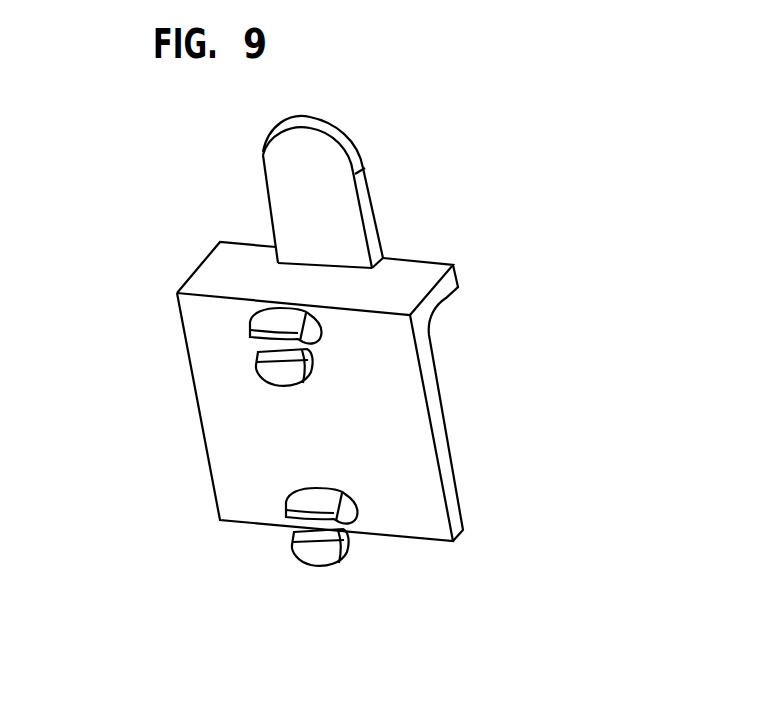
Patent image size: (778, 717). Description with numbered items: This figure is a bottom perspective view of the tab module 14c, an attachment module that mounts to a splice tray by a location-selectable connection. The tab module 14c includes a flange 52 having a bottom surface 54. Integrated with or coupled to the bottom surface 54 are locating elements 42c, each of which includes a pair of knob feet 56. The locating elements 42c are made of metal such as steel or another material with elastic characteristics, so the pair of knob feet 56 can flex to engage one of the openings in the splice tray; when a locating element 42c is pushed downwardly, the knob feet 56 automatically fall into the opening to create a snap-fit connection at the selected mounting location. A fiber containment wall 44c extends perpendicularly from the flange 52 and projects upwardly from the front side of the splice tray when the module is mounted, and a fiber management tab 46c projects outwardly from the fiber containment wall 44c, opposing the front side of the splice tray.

The tab module 14c is at (558, 113).
The locating elements 42c is at (316, 433).
The fiber containment wall 44c is at (420, 277).
The fiber management tab 46c is at (350, 147).
The flange 52 is at (356, 369).
The bottom surface 54 is at (378, 423).
The knob feet 56 is at (253, 325).